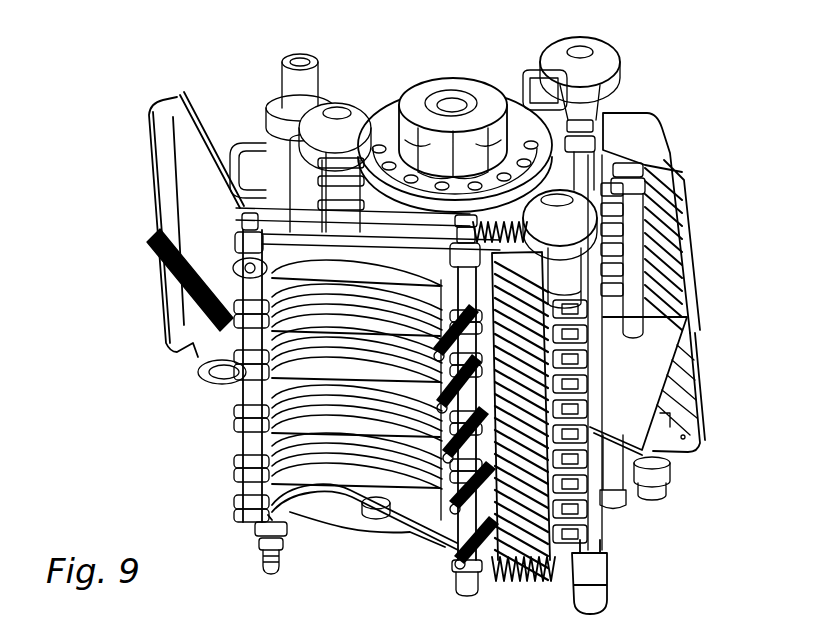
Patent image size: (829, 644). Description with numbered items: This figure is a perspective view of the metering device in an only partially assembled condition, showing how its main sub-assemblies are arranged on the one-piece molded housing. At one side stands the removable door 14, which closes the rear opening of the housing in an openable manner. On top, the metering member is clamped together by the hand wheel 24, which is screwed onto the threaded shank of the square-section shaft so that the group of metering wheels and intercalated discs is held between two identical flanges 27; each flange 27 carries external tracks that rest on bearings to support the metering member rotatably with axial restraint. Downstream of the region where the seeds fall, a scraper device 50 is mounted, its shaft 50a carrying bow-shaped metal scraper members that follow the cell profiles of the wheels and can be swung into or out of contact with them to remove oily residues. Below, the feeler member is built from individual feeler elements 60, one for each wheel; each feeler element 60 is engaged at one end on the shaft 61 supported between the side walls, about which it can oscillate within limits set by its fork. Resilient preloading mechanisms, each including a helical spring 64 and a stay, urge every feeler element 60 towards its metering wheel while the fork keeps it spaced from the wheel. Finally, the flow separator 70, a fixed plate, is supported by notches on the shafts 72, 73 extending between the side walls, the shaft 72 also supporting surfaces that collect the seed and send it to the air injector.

The removable door 14 is at (190, 137).
The hand wheel 24 is at (420, 97).
The flange 27 is at (507, 118).
The scraper device 50 is at (600, 537).
The shaft 50a is at (583, 562).
The feeler element 60 is at (250, 447).
The shaft 61 is at (257, 507).
The helical spring 64 is at (450, 510).
The flow separator 70 is at (650, 355).
The shaft 72 is at (630, 262).
The shaft 73 is at (590, 247).